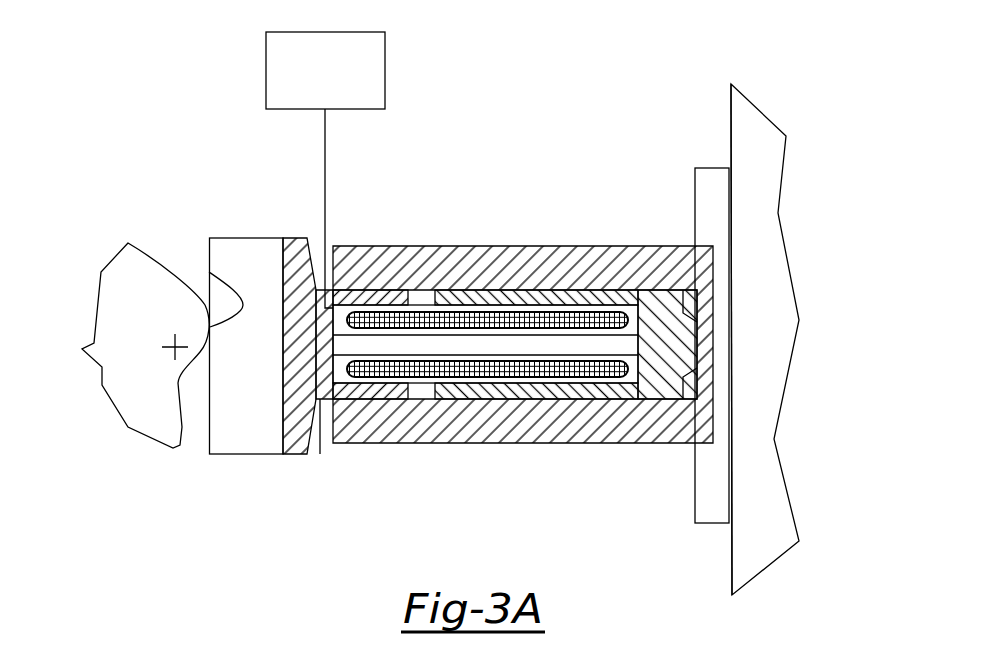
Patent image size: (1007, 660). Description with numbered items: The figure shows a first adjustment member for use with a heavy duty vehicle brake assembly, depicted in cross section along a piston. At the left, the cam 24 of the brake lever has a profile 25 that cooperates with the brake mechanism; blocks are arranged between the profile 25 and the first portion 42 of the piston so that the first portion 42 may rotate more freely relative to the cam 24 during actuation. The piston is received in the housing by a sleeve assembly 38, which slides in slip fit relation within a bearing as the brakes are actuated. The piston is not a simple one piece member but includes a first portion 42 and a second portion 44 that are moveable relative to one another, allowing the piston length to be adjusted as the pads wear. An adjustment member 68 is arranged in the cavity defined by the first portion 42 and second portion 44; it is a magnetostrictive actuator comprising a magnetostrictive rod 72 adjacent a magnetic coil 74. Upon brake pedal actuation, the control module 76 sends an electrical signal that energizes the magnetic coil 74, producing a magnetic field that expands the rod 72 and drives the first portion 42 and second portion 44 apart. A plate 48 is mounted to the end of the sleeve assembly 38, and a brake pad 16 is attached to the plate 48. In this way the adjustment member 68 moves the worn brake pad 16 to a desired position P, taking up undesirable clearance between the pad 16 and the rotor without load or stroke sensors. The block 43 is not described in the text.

The control module 76 is at (275, 85).
The slide block 43 is at (252, 248).
The cam 24 is at (118, 323).
The profile 25 is at (209, 272).
The sleeve assembly 38 is at (570, 427).
The first portion 42 is at (380, 300).
The adjustment member 68 is at (487, 396).
The magnetic coil 74 is at (491, 317).
The magnetostrictive rod 72 is at (628, 338).
The second portion 44 is at (668, 298).
The plate 48 is at (712, 178).
The brake pad 16 is at (766, 394).
The desired position P is at (774, 114).